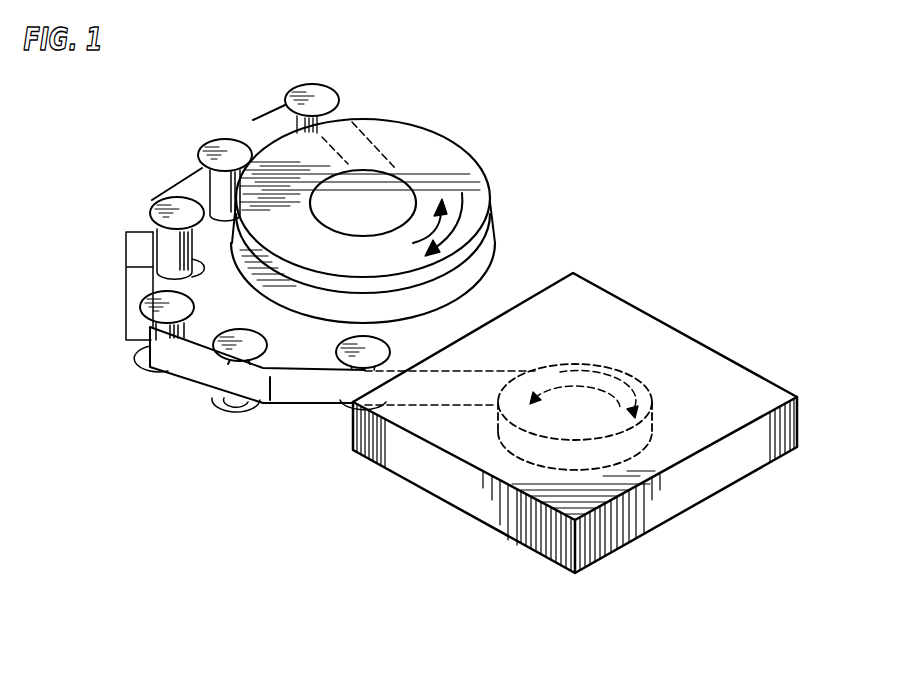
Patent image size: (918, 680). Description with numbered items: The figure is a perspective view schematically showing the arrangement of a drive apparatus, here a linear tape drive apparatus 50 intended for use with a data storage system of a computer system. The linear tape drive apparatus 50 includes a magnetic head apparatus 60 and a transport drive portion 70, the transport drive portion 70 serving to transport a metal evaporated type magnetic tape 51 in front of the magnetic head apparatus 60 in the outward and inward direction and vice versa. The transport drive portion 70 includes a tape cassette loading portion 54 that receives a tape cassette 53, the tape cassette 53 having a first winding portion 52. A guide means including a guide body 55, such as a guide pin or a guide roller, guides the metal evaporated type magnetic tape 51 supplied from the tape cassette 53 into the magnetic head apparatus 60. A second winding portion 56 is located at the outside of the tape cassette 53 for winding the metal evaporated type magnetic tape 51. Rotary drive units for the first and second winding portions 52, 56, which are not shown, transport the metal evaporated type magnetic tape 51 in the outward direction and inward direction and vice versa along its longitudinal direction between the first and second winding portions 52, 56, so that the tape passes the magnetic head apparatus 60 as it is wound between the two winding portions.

The linear tape drive apparatus 50 is at (488, 91).
The metal evaporated type magnetic tape 51 is at (254, 118).
The first winding portion 52 is at (633, 393).
The tape cassette 53 is at (637, 527).
The tape cassette loading portion 54 is at (572, 644).
The guide body 55 is at (310, 87).
The second winding portion 56 is at (458, 173).
The magnetic head apparatus 60 is at (140, 248).
The transport drive portion 70 is at (565, 231).